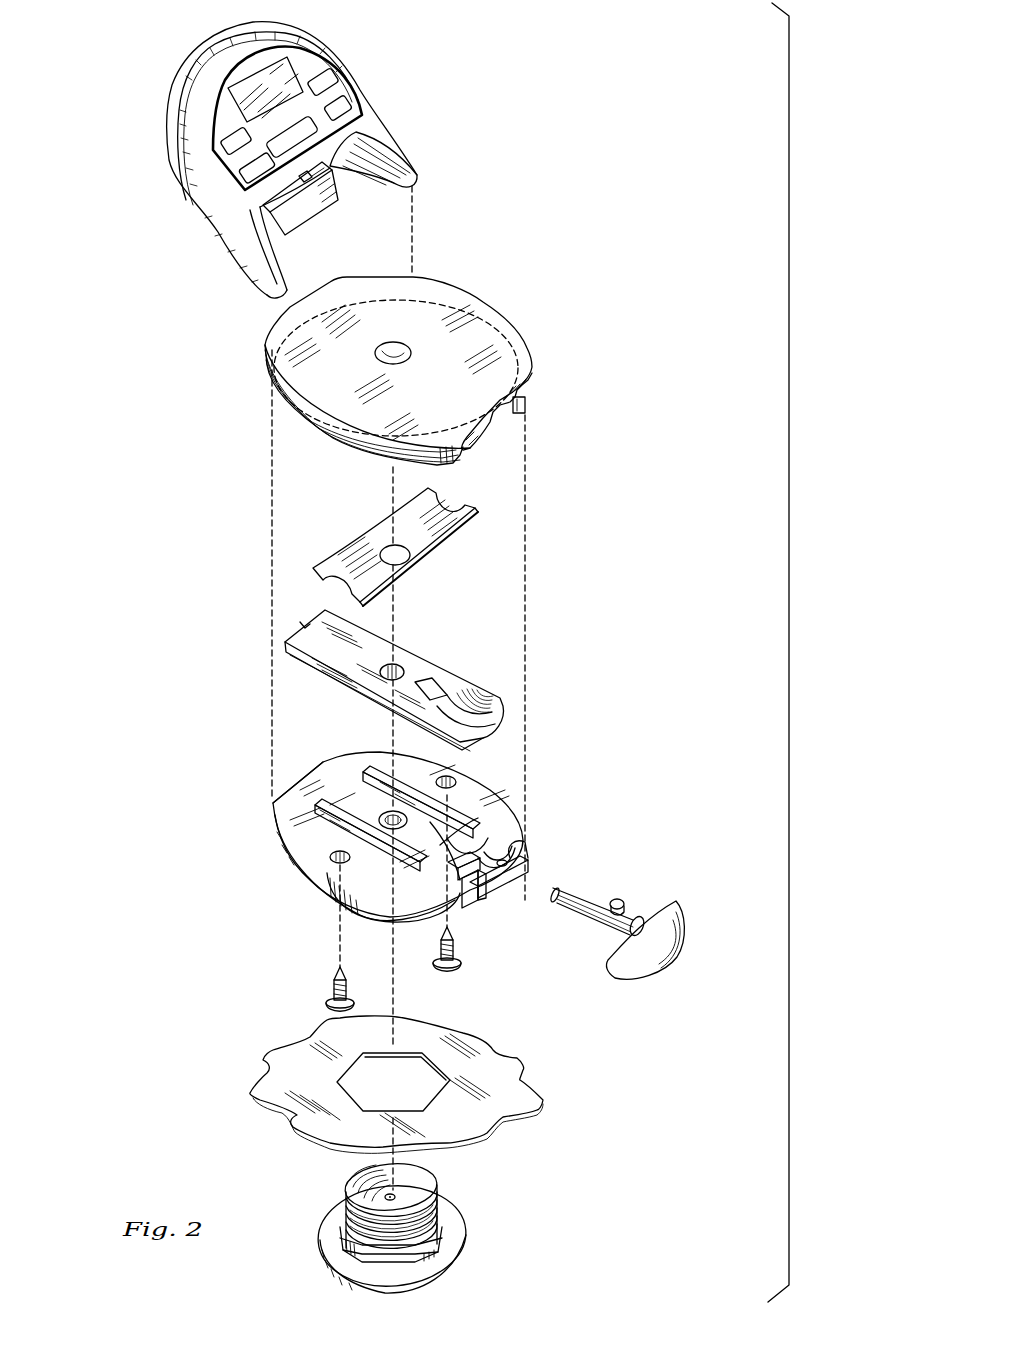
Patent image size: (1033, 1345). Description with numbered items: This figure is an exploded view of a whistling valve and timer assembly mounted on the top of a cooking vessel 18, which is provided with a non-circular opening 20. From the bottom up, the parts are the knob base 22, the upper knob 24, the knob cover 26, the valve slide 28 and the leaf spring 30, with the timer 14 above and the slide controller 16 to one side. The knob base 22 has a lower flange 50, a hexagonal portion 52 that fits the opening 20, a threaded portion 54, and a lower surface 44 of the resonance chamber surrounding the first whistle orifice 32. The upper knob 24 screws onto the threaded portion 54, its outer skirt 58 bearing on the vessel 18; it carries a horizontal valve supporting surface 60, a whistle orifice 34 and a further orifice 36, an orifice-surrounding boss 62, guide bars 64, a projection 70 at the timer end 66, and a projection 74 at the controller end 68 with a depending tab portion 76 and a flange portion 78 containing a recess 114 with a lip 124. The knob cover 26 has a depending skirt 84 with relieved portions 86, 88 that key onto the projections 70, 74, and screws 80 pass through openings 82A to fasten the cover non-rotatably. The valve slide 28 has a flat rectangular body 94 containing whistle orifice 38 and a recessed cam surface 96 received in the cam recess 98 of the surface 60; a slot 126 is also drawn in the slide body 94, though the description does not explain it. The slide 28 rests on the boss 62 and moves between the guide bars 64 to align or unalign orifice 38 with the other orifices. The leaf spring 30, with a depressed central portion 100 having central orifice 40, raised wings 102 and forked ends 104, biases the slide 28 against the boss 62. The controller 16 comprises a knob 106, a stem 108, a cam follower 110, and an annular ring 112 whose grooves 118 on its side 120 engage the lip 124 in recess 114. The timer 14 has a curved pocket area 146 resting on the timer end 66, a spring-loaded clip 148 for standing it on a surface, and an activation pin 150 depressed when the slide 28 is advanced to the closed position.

The timer 14 is at (321, 160).
The slide controller 16 is at (648, 926).
The cooking vessel 18 is at (420, 1080).
The non-circular opening 20 is at (426, 1072).
The knob base 22 is at (421, 1229).
The upper knob 24 is at (456, 865).
The knob cover 26 is at (387, 368).
The valve slide 28 is at (372, 676).
The leaf spring 30 is at (408, 548).
The whistle orifice 32 is at (388, 1197).
The whistle orifice 34 is at (385, 822).
The orifice 36 is at (396, 350).
The whistle orifice 38 is at (384, 672).
The central orifice 40 is at (384, 550).
The lower surface 44 is at (422, 1190).
The lower flange 50 is at (448, 1267).
The hexagonal portion 52 is at (360, 1262).
The threaded portion 54 is at (345, 1224).
The outer skirt 58 is at (373, 907).
The valve supporting surface 60 is at (424, 820).
The boss 62 is at (272, 799).
The guide bars 64 is at (427, 825).
The timer end 66 is at (310, 786).
The controller end 68 is at (462, 893).
The projection 70 is at (312, 770).
The projection 74 is at (525, 874).
The tab portion 76 is at (490, 893).
The flange portion 78 is at (522, 847).
The screws 80 is at (434, 970).
The openings 82A is at (454, 780).
The depending skirt 84 is at (363, 463).
The relieved portion 86 is at (288, 308).
The relieved portion 88 is at (495, 432).
The flat rectangular body 94 is at (350, 673).
The recessed cam surface 96 is at (500, 690).
The cam recess 98 is at (388, 732).
The depressed central portion 100 is at (418, 557).
The raised wing 102 is at (459, 517).
The forked ends 104 is at (449, 500).
The knob 106 is at (662, 937).
The stem 108 is at (587, 897).
The cam follower 110 is at (619, 900).
The annular ring 112 is at (639, 923).
The recess 114 is at (511, 842).
The grooves 118 is at (630, 927).
The side 120 is at (602, 925).
The lip 124 is at (493, 848).
The slot 126 is at (447, 690).
The curved pocket area 146 is at (373, 143).
The spring-loaded clip 148 is at (297, 217).
The activation pin 150 is at (338, 203).